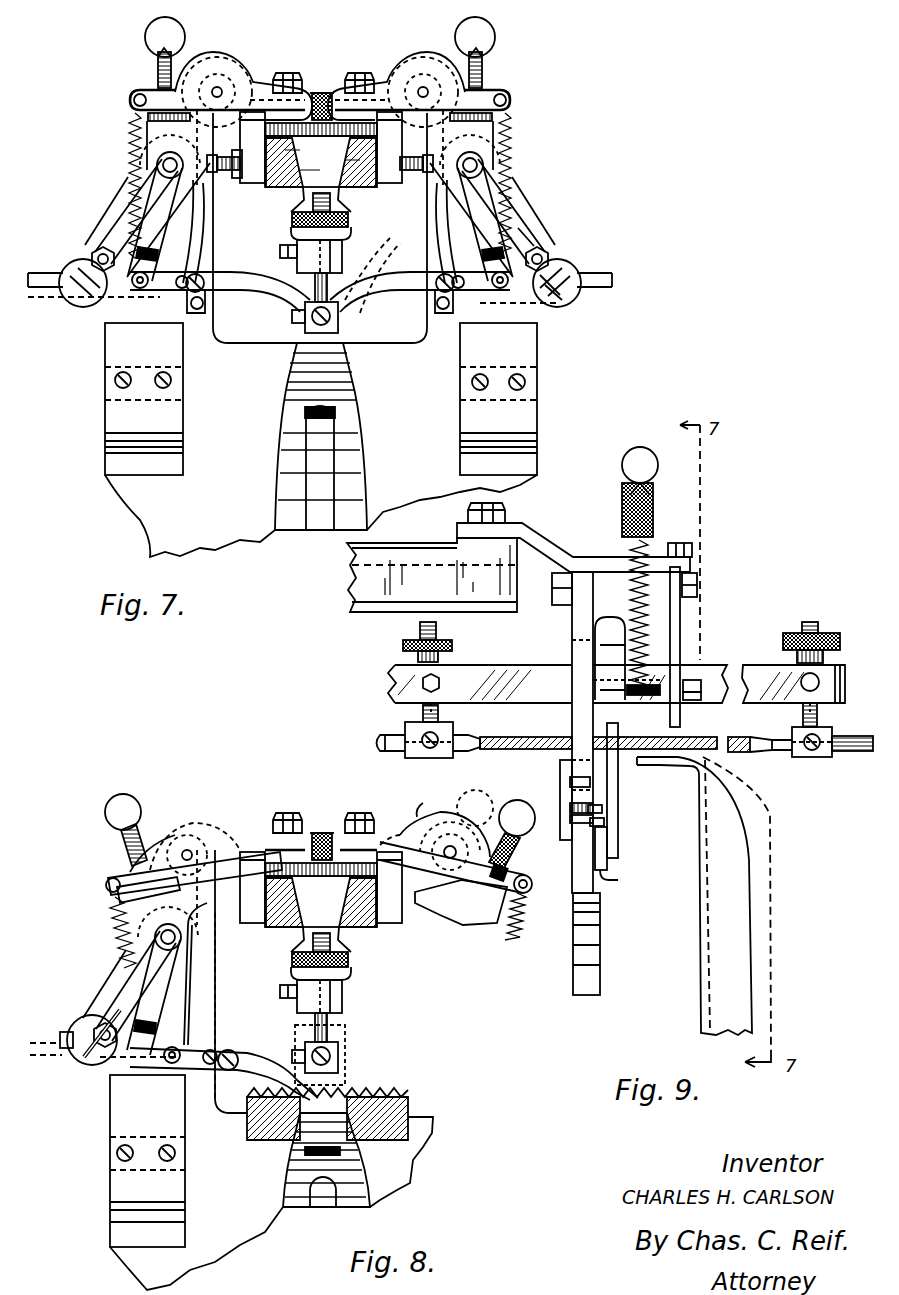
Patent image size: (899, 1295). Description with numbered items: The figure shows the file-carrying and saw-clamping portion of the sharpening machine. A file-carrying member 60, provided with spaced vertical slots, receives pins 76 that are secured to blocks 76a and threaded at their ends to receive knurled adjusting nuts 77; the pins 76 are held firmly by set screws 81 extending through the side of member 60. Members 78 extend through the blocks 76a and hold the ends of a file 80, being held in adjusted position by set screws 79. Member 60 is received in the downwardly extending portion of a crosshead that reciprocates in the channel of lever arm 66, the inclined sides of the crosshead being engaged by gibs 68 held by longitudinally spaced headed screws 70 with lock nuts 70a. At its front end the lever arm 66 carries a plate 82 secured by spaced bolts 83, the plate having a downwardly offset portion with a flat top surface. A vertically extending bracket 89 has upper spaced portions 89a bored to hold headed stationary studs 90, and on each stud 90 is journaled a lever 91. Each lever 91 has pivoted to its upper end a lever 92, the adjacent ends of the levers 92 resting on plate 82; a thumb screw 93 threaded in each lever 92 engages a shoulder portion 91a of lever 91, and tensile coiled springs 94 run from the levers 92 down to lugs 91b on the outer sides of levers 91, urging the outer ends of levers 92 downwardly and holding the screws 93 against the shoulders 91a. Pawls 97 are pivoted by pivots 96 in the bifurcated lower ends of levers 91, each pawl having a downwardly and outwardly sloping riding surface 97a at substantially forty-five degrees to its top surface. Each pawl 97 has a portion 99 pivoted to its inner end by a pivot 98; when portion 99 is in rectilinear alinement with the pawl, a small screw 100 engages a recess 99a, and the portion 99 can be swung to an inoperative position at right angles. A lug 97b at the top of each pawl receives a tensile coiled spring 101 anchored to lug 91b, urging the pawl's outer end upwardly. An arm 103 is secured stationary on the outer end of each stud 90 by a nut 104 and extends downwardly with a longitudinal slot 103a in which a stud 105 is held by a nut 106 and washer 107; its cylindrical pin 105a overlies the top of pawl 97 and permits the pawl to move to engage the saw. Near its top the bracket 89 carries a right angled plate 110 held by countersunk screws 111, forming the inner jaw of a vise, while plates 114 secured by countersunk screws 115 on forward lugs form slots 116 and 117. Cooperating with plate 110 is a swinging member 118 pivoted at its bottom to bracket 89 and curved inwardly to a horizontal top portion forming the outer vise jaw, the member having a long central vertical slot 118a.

In FIG. 7, the file-carrying member 60 is at (342, 255).
In FIG. 9, the file-carrying member 60 is at (500, 665).
In FIG. 8, the file-carrying member 60 is at (339, 996).
In FIG. 9, the lever arm 66 is at (416, 548).
In FIG. 7, the gibs 68 is at (285, 186).
In FIG. 8, the gibs 68 is at (334, 904).
In FIG. 7, the headed screws 70 is at (217, 162).
In FIG. 7, the lock nuts 70a is at (247, 178).
In FIG. 7, the pins 76 is at (313, 193).
In FIG. 9, the pins 76 is at (438, 712).
In FIG. 8, the pins 76 is at (321, 921).
In FIG. 7, the blocks 76a is at (338, 318).
In FIG. 9, the blocks 76a is at (408, 758).
In FIG. 8, the blocks 76a is at (344, 1055).
In FIG. 7, the knurled adjusting nuts 77 is at (350, 220).
In FIG. 9, the knurled adjusting nuts 77 is at (403, 645).
In FIG. 8, the knurled adjusting nuts 77 is at (345, 964).
In FIG. 9, the file-holding members 78 is at (378, 738).
In FIG. 7, the set screws 79 is at (292, 316).
In FIG. 9, the set screws 79 is at (430, 750).
In FIG. 8, the set screws 79 is at (283, 1047).
In FIG. 7, the file 80 is at (327, 300).
In FIG. 9, the file 80 is at (525, 737).
In FIG. 8, the file 80 is at (349, 1040).
In FIG. 7, the set screws 81 is at (281, 250).
In FIG. 9, the set screws 81 is at (440, 684).
In FIG. 8, the set screws 81 is at (270, 987).
In FIG. 7, the plate 82 is at (322, 118).
In FIG. 9, the plate 82 is at (692, 552).
In FIG. 8, the plate 82 is at (321, 832).
In FIG. 7, the bolts 83 is at (358, 73).
In FIG. 9, the bolts 83 is at (505, 512).
In FIG. 8, the bolts 83 is at (323, 808).
In FIG. 9, the vertically extending bracket 89 is at (600, 928).
In FIG. 7, the upper spaced portions 89a is at (418, 240).
In FIG. 9, the upper spaced portions 89a is at (572, 634).
In FIG. 8, the upper spaced portions 89a is at (207, 963).
In FIG. 7, the headed stationary studs 90 is at (168, 178).
In FIG. 9, the headed stationary studs 90 is at (552, 588).
In FIG. 8, the headed stationary studs 90 is at (165, 950).
In FIG. 7, the levers 91 is at (145, 132).
In FIG. 8, the levers 91 is at (460, 920).
In FIG. 7, the shoulder portion 91a is at (134, 103).
In FIG. 9, the shoulder portion 91a is at (628, 546).
In FIG. 7, the lugs 91b is at (126, 178).
In FIG. 9, the lugs 91b is at (610, 658).
In FIG. 7, the levers 92 is at (226, 60).
In FIG. 8, the levers 92 is at (192, 823).
In FIG. 7, the thumb screw 93 is at (152, 44).
In FIG. 9, the thumb screw 93 is at (624, 476).
In FIG. 8, the thumb screw 93 is at (108, 824).
In FIG. 7, the tensile coiled springs 94 is at (130, 125).
In FIG. 9, the tensile coiled springs 94 is at (650, 548).
In FIG. 8, the tensile coiled springs 94 is at (118, 908).
In FIG. 7, the pivots 96 is at (140, 288).
In FIG. 8, the pivots 96 is at (170, 1063).
In FIG. 7, the pawls 97 is at (42, 273).
In FIG. 9, the pawls 97 is at (648, 755).
In FIG. 8, the pawls 97 is at (40, 1043).
In FIG. 7, the bar ring 97a is at (83, 262).
In FIG. 7, the lug 97b is at (530, 230).
In FIG. 7, the pivot 98 is at (200, 272).
In FIG. 8, the pivot 98 is at (235, 1047).
In FIG. 7, the pawl portion 99 is at (238, 285).
In FIG. 8, the pawl portion 99 is at (250, 1068).
In FIG. 7, the recess 99a is at (450, 296).
In FIG. 7, the small screw 100 is at (184, 292).
In FIG. 7, the tensile coiled spring 101 is at (168, 250).
In FIG. 9, the tensile coiled spring 101 is at (632, 660).
In FIG. 7, the arm 103 is at (118, 215).
In FIG. 9, the arm 103 is at (680, 625).
In FIG. 8, the arm 103 is at (118, 1003).
In FIG. 7, the slot 103a is at (560, 285).
In FIG. 8, the slot 103a is at (110, 1000).
In FIG. 7, the nut 104 is at (178, 228).
In FIG. 9, the nut 104 is at (697, 578).
In FIG. 7, the stud 105 is at (545, 297).
In FIG. 9, the stud 105 is at (700, 683).
In FIG. 9, the cylindrical pin 105a is at (593, 682).
In FIG. 7, the nut 106 is at (100, 248).
In FIG. 9, the nut 106 is at (698, 692).
In FIG. 8, the nut 106 is at (96, 1028).
In FIG. 9, the washer 107 is at (693, 700).
In FIG. 9, the right angled bracket or plate 110 is at (560, 768).
In FIG. 9, the countersunk screws 111 is at (570, 815).
In FIG. 7, the plates 114 is at (183, 413).
In FIG. 9, the plates 114 is at (607, 835).
In FIG. 8, the plates 114 is at (185, 1175).
In FIG. 7, the countersunk screws 115 is at (160, 372).
In FIG. 9, the countersunk screws 115 is at (604, 810).
In FIG. 8, the countersunk screws 115 is at (175, 1153).
In FIG. 9, the slot 116 is at (612, 868).
In FIG. 9, the slot 117 is at (618, 772).
In FIG. 7, the swinging member 118 is at (282, 445).
In FIG. 9, the swinging member 118 is at (737, 888).
In FIG. 8, the swinging member 118 is at (295, 1212).
In FIG. 7, the central vertical slot 118a is at (323, 447).